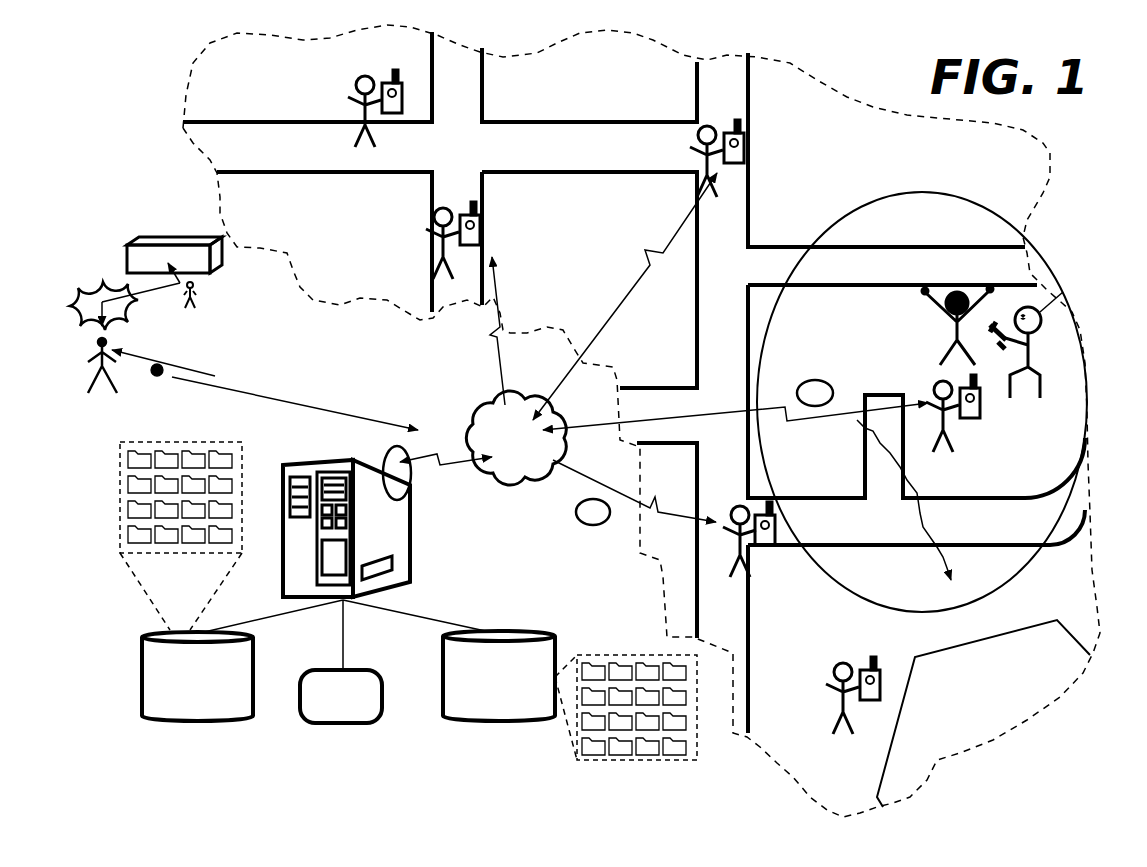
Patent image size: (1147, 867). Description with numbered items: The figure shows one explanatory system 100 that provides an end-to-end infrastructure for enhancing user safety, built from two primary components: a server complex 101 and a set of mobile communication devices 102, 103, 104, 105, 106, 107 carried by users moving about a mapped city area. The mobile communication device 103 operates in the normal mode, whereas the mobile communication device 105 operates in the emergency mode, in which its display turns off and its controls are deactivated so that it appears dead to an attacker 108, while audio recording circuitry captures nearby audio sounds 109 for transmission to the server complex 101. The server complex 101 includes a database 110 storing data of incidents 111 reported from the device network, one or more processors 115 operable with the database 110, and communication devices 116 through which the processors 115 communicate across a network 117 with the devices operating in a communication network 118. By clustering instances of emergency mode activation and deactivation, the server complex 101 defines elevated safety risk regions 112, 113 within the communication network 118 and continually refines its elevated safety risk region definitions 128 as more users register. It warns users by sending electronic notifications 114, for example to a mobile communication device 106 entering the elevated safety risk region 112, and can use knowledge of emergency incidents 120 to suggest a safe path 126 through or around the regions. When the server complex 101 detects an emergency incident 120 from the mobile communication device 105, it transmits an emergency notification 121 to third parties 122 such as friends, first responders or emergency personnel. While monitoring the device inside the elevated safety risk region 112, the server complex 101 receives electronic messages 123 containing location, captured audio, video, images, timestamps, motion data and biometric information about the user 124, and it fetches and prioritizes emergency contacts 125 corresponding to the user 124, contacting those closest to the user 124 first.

The system 100 is at (170, 177).
The server complex 101 is at (382, 520).
The mobile communication device 102 is at (388, 82).
The mobile communication device 103 is at (482, 228).
The mobile communication device 104 is at (740, 143).
The mobile communication device 105 is at (980, 403).
The mobile communication device 106 is at (777, 527).
The mobile communication device 107 is at (880, 677).
The attacker 108 is at (1043, 370).
The nearby audio sounds 109 is at (1080, 270).
The database 110 is at (525, 628).
The incidents 111 is at (593, 747).
The elevated safety risk region 112 is at (838, 222).
The elevated safety risk region 113 is at (1017, 627).
The electronic notification 114 is at (580, 513).
The processor 115 is at (330, 723).
The communication device 116 is at (418, 460).
The network 117 is at (486, 406).
The communication network 118 is at (1097, 580).
The emergency incident 120 is at (943, 333).
The emergency notification 121 is at (160, 366).
The third parties 122 is at (190, 237).
The electronic messages 123 is at (810, 373).
The user 124 is at (957, 435).
The emergency contacts 125 is at (600, 665).
The safe path 126 is at (947, 567).
The elevated safety risk region definitions 128 is at (130, 455).